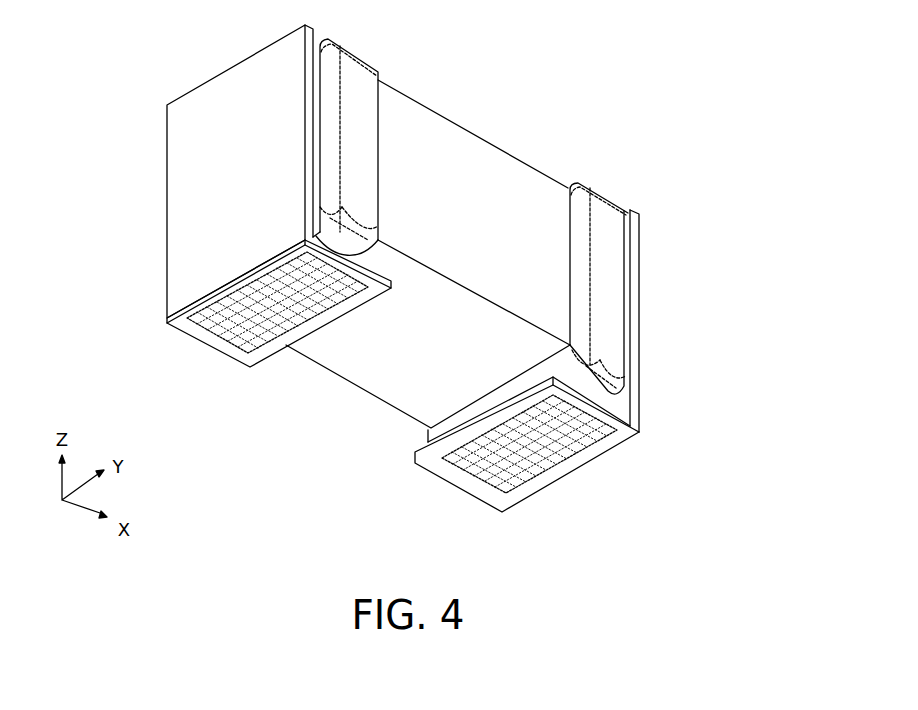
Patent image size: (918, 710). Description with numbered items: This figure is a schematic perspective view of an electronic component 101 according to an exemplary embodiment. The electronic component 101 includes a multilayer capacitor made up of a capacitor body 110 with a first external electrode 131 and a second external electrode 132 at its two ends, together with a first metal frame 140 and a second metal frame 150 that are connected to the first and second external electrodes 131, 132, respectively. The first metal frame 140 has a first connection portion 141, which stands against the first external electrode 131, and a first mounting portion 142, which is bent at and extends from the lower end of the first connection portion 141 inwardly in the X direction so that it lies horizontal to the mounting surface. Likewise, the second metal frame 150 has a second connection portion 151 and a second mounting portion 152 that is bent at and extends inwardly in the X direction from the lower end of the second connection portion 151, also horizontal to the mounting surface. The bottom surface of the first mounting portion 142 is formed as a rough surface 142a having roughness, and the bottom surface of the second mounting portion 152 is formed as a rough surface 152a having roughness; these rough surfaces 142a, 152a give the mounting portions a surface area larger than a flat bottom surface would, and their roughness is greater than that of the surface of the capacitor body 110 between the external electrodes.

The electronic component 101 is at (540, 157).
The capacitor body 110 is at (463, 150).
The first external electrode 131 is at (353, 88).
The second external electrode 132 is at (600, 230).
The first metal frame 140 is at (88, 228).
The first connection portion 141 is at (191, 212).
The first mounting portion 142 is at (214, 304).
The rough surface 142a is at (266, 345).
The second metal frame 150 is at (738, 362).
The second connection portion 151 is at (637, 350).
The second mounting portion 152 is at (610, 402).
The rough surface 152a is at (574, 472).